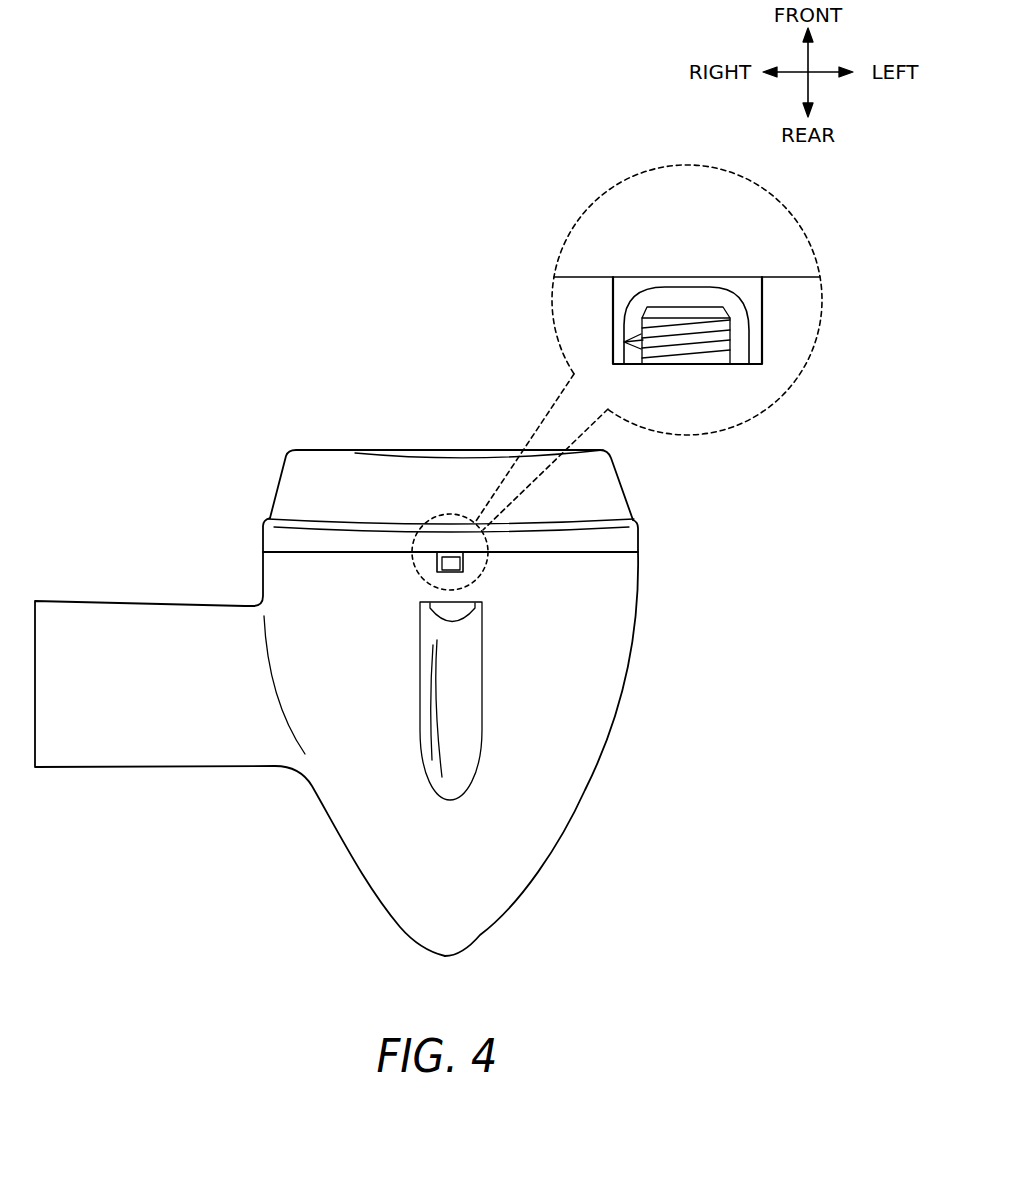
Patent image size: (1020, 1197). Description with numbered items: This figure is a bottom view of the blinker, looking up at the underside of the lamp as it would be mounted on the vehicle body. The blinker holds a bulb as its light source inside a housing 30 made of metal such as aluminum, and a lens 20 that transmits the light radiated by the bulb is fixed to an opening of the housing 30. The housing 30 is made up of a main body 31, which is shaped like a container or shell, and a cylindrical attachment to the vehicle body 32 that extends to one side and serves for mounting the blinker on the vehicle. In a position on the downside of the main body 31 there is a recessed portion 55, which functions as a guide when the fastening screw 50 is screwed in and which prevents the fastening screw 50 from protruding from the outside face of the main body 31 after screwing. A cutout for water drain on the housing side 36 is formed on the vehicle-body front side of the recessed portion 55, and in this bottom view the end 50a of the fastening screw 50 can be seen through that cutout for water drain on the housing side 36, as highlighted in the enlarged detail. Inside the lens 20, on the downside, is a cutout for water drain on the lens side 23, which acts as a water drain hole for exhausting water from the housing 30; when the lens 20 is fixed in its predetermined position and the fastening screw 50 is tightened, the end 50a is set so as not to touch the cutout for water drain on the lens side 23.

The lens 20 is at (327, 470).
The cutout for water drain on the lens side 23 is at (642, 317).
The housing 30 is at (300, 898).
The main body 31 is at (517, 873).
The attachment to the vehicle body 32 is at (128, 749).
The cutout for water drain on the housing side 36 is at (462, 541).
The fastening screw 50 is at (448, 622).
The end of the fastening screw 50a is at (452, 548).
The recessed portion 55 is at (460, 670).